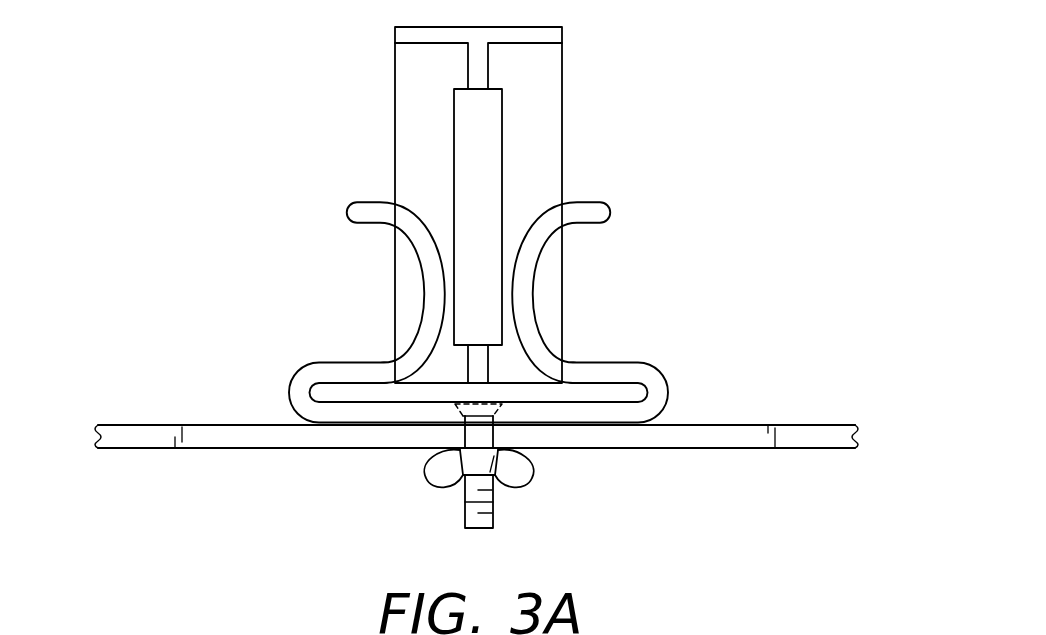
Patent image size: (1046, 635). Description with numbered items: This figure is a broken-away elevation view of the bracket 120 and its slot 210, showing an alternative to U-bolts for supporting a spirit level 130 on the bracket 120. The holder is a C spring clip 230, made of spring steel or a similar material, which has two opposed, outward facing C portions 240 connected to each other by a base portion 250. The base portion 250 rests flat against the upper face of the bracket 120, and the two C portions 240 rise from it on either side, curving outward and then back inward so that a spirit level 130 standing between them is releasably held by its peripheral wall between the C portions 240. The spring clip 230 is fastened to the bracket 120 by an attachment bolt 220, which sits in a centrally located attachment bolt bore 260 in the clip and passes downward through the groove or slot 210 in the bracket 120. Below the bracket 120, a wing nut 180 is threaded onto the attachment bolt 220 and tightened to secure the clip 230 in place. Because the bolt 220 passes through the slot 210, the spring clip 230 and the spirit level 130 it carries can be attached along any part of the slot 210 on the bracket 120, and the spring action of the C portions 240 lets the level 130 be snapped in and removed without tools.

The bracket 120 is at (807, 425).
The spirit level 130 is at (562, 80).
The wing nut 180 is at (527, 470).
The slot 210 is at (700, 430).
The attachment bolt 220 is at (460, 432).
The C spring clip 230 is at (513, 306).
The C portions 240 is at (437, 307).
The base portion 250 is at (575, 415).
The attachment bolt bore 260 is at (460, 418).